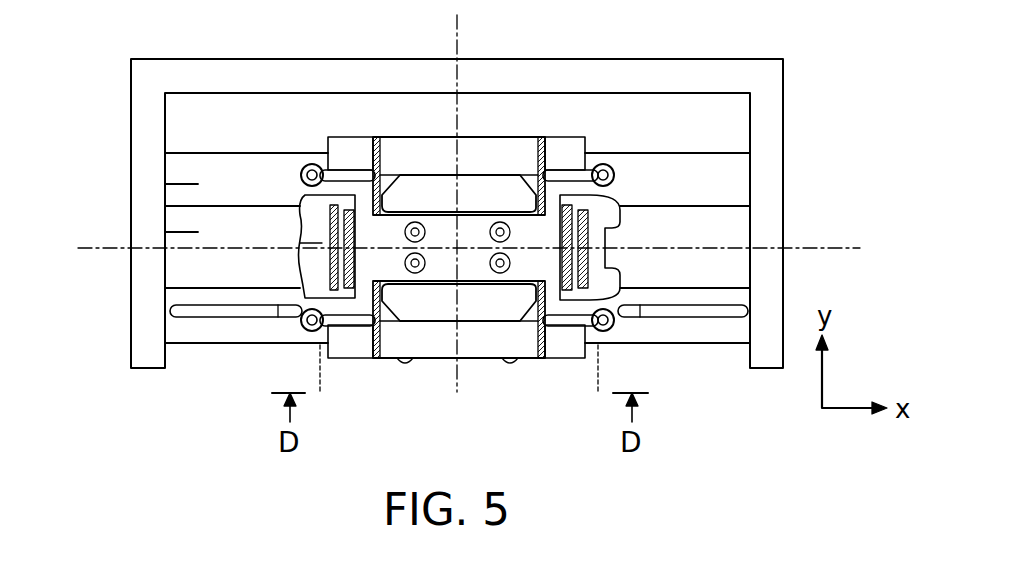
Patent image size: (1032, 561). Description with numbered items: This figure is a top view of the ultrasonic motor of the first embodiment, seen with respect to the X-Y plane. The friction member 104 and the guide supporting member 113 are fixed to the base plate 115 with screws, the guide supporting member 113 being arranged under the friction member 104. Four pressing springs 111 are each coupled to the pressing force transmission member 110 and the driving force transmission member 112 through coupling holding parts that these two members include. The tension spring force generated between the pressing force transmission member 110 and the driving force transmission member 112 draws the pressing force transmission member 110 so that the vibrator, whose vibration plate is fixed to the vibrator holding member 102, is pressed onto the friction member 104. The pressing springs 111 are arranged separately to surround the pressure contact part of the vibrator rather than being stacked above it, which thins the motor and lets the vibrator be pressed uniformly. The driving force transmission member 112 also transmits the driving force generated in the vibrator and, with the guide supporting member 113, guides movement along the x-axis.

The vibrator holding member 102 is at (393, 340).
The friction member 104 is at (165, 232).
The pressing force transmission member 110 is at (447, 228).
The pressing spring 111 is at (308, 168).
The driving force transmission member 112 is at (565, 160).
The guide supporting member 113 is at (165, 184).
The base plate 115 is at (131, 133).